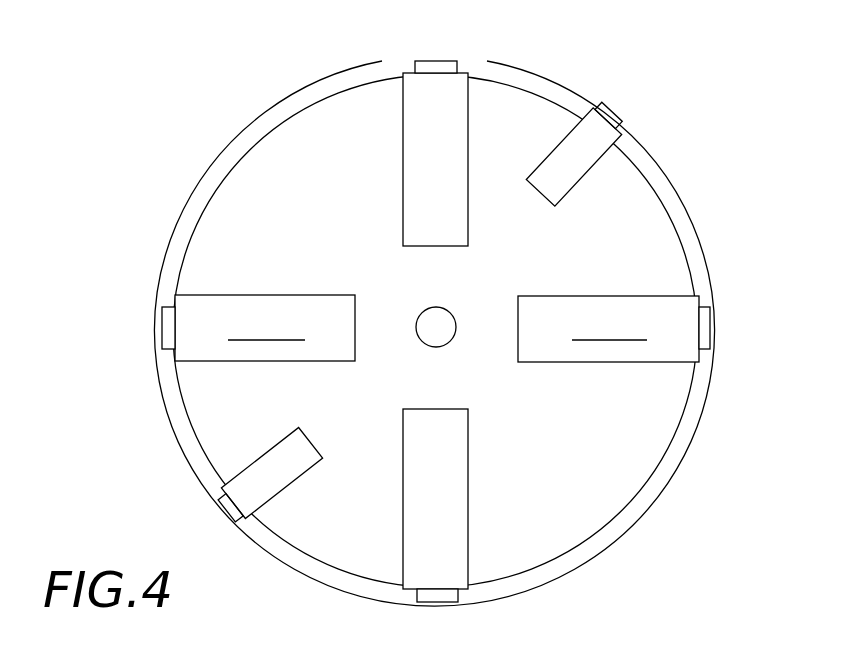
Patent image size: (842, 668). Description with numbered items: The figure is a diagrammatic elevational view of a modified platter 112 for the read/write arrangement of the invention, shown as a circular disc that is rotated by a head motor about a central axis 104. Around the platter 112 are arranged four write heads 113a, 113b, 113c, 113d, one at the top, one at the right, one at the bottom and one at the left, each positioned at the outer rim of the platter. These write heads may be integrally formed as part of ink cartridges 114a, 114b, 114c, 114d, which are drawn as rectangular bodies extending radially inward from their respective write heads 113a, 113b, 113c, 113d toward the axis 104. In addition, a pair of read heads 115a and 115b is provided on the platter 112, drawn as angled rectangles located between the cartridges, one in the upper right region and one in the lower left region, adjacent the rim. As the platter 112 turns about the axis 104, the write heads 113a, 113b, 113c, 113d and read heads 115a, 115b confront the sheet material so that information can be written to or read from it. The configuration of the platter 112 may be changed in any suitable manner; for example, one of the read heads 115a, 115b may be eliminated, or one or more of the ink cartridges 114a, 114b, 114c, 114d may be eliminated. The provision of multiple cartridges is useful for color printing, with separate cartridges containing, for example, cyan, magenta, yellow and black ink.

The platter 112 is at (230, 178).
The axis 104 is at (418, 340).
The write head 113a is at (428, 61).
The write head 113b is at (710, 328).
The write head 113c is at (440, 602).
The write head 113d is at (162, 330).
The ink cartridge 114a is at (403, 203).
The ink cartridge 114b is at (608, 329).
The ink cartridge 114c is at (468, 477).
The ink cartridge 114d is at (265, 328).
The read head 115a is at (625, 128).
The read head 115b is at (228, 510).